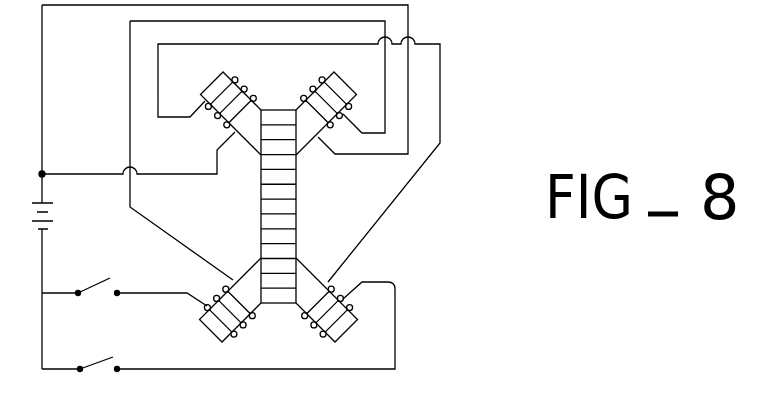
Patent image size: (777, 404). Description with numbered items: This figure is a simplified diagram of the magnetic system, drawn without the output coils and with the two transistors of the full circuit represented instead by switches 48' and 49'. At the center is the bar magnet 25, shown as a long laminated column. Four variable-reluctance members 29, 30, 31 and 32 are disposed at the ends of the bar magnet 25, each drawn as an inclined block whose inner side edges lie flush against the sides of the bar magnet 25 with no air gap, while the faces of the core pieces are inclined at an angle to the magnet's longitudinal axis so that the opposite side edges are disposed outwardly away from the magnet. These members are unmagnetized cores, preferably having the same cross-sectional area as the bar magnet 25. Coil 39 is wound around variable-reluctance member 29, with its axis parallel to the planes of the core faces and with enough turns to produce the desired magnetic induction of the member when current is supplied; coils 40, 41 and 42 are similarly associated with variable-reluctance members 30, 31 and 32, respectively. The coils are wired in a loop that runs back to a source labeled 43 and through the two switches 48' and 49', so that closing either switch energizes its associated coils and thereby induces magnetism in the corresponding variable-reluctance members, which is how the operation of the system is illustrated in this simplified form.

The bar magnet 25 is at (297, 222).
The variable-reluctance member 29 is at (210, 330).
The variable-reluctance member 30 is at (345, 323).
The variable-reluctance member 31 is at (353, 84).
The variable-reluctance member 32 is at (213, 82).
The coil 39 is at (247, 328).
The coil 40 is at (338, 280).
The coil 41 is at (306, 96).
The coil 42 is at (251, 104).
The battery 43 is at (53, 228).
The switch 48' is at (124, 275).
The switch 49' is at (218, 327).